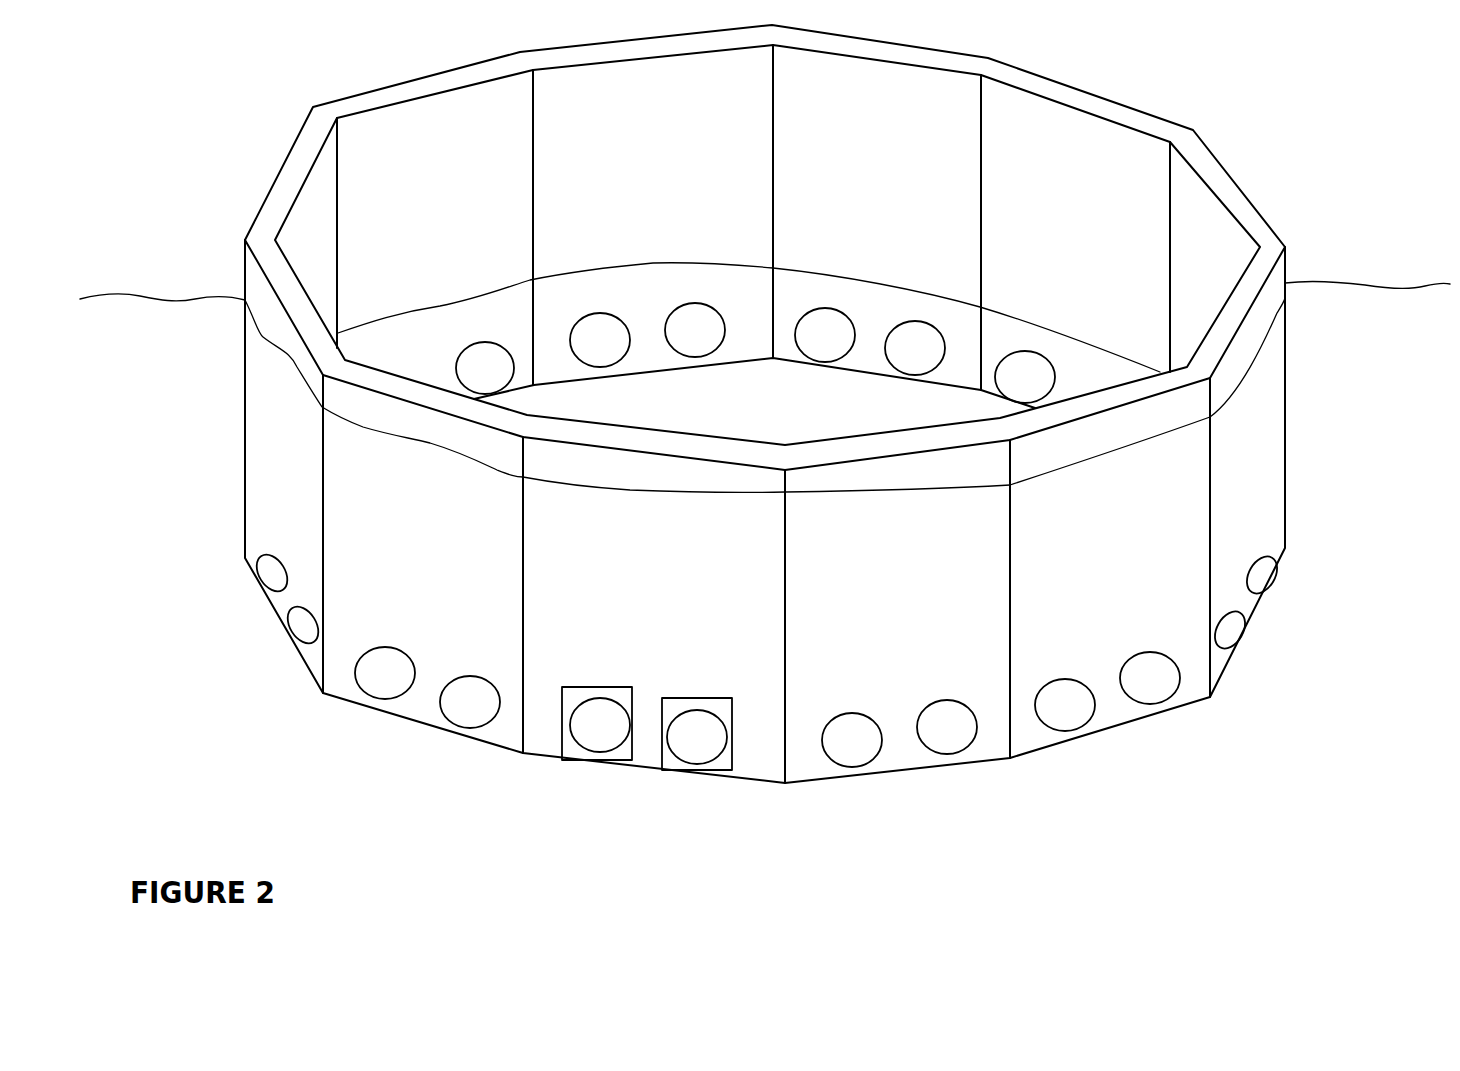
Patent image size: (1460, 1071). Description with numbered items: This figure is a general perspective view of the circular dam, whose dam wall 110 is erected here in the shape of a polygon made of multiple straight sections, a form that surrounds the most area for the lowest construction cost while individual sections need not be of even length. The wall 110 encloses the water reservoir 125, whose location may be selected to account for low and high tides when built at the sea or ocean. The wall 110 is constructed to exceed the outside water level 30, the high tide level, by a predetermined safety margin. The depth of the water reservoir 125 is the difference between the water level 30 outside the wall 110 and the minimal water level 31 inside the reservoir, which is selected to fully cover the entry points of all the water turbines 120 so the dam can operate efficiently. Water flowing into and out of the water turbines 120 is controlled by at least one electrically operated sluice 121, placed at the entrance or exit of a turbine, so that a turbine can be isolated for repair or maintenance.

The dam wall 110 is at (287, 157).
The water reservoir 125 is at (925, 243).
The water turbines 120 is at (1284, 552).
The electrically operated sluice 121 is at (596, 686).
The minimal water level 31 is at (653, 263).
The water level 30 is at (1410, 255).